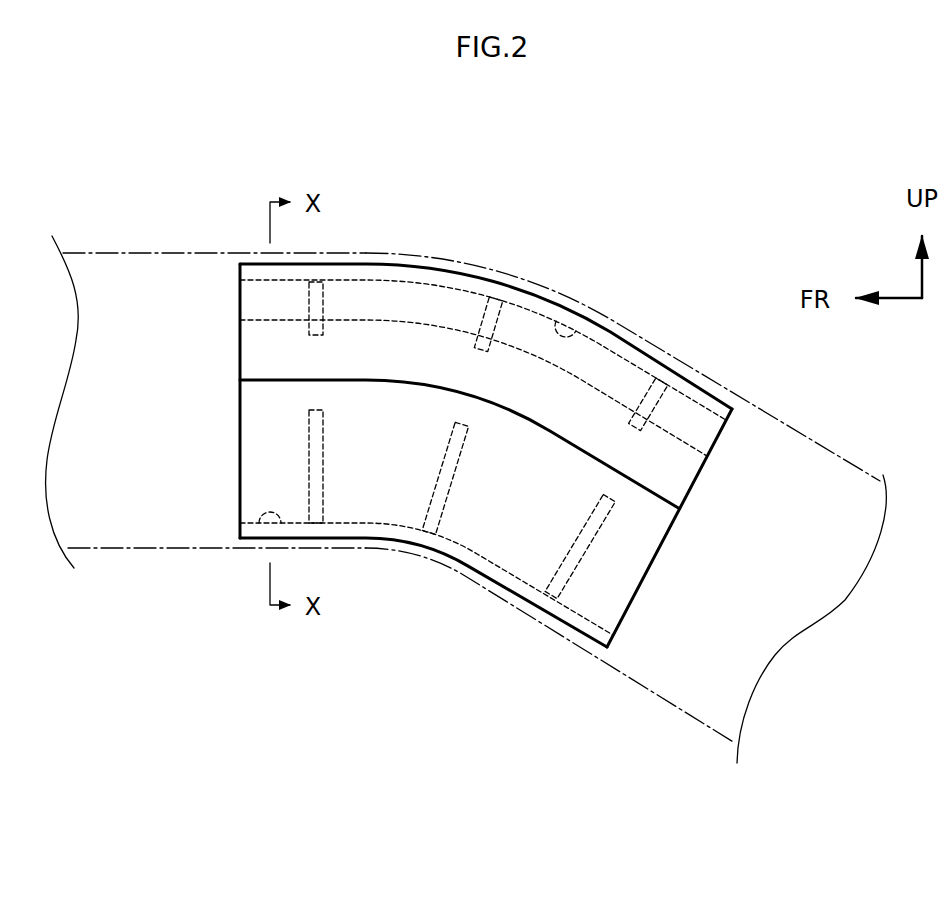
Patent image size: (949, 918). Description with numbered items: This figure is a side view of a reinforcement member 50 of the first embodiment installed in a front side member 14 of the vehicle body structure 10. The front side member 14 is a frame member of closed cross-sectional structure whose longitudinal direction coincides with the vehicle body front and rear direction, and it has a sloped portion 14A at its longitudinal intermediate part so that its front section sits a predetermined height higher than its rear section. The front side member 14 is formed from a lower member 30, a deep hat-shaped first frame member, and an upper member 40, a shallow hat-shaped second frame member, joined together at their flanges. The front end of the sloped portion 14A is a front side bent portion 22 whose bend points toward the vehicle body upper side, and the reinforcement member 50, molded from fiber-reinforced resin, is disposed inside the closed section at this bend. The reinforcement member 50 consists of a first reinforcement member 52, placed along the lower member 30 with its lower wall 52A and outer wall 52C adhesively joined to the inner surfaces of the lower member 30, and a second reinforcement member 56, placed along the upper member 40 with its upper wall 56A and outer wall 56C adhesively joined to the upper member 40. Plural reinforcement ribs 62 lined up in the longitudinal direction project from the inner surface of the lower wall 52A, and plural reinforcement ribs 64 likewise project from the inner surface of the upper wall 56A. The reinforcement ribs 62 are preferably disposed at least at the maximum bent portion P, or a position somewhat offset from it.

The vehicle body structure 10 is at (453, 633).
The front side member 14 is at (192, 250).
The sloped portion 14A is at (692, 717).
The front side bent portion 22 is at (539, 281).
The lower member 30 is at (381, 551).
The upper member 40 is at (359, 253).
The reinforcement member 50 is at (418, 263).
The first reinforcement member 52 is at (560, 622).
The lower wall 52A is at (259, 524).
The outer wall 52C is at (256, 467).
The second reinforcement member 56 is at (687, 378).
The upper wall 56A is at (573, 321).
The outer wall 56C is at (256, 345).
The reinforcement ribs 62 is at (582, 552).
The reinforcement ribs 64 is at (663, 402).
The maximum bent portion P is at (435, 553).